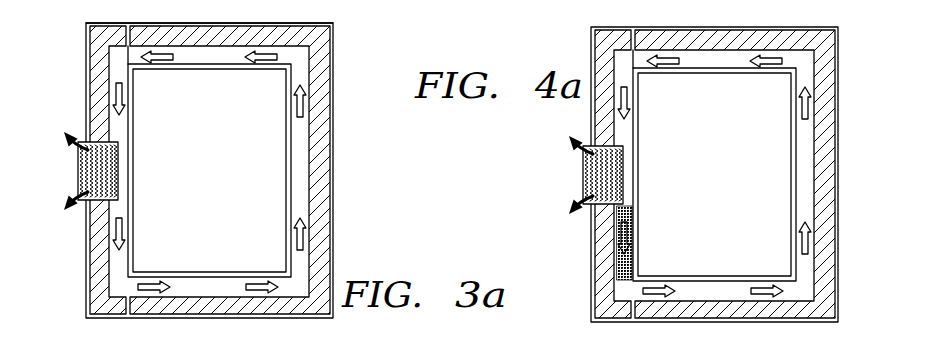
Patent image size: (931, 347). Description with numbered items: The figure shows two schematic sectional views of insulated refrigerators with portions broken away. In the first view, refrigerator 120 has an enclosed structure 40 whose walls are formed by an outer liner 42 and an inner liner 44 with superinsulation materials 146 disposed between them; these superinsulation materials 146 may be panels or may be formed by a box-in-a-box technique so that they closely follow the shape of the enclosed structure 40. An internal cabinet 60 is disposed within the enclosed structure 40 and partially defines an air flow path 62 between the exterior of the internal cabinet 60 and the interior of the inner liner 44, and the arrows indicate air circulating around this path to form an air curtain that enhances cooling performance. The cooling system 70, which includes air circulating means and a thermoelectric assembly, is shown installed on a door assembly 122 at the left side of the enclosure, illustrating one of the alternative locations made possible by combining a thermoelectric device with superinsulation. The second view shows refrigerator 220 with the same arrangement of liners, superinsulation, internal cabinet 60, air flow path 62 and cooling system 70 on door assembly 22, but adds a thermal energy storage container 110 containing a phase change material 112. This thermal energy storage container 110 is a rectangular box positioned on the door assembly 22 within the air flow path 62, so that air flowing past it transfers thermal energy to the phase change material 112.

In FIG. 4A, the door assembly 22 is at (588, 55).
In FIG. 3A, the enclosed structure 40 is at (340, 115).
In FIG. 4A, the enclosed structure 40 is at (843, 190).
In FIG. 3A, the outer liner 42 is at (308, 24).
In FIG. 3A, the inner liner 44 is at (228, 47).
In FIG. 3A, the internal cabinet 60 is at (138, 133).
In FIG. 4A, the internal cabinet 60 is at (715, 80).
In FIG. 3A, the air flow path 62 is at (302, 268).
In FIG. 4A, the air flow path 62 is at (807, 270).
In FIG. 3A, the cooling system 70 is at (78, 165).
In FIG. 4A, the cooling system 70 is at (583, 168).
In FIG. 4A, the thermal energy storage container 110 is at (638, 242).
In FIG. 4A, the phase change material 112 is at (631, 222).
In FIG. 3A, the refrigerator 120 is at (348, 155).
In FIG. 3A, the door assembly 122 is at (84, 52).
In FIG. 3A, the superinsulation materials 146 is at (320, 56).
In FIG. 4A, the superinsulation materials 146 is at (812, 30).
In FIG. 4A, the refrigerator 220 is at (846, 138).